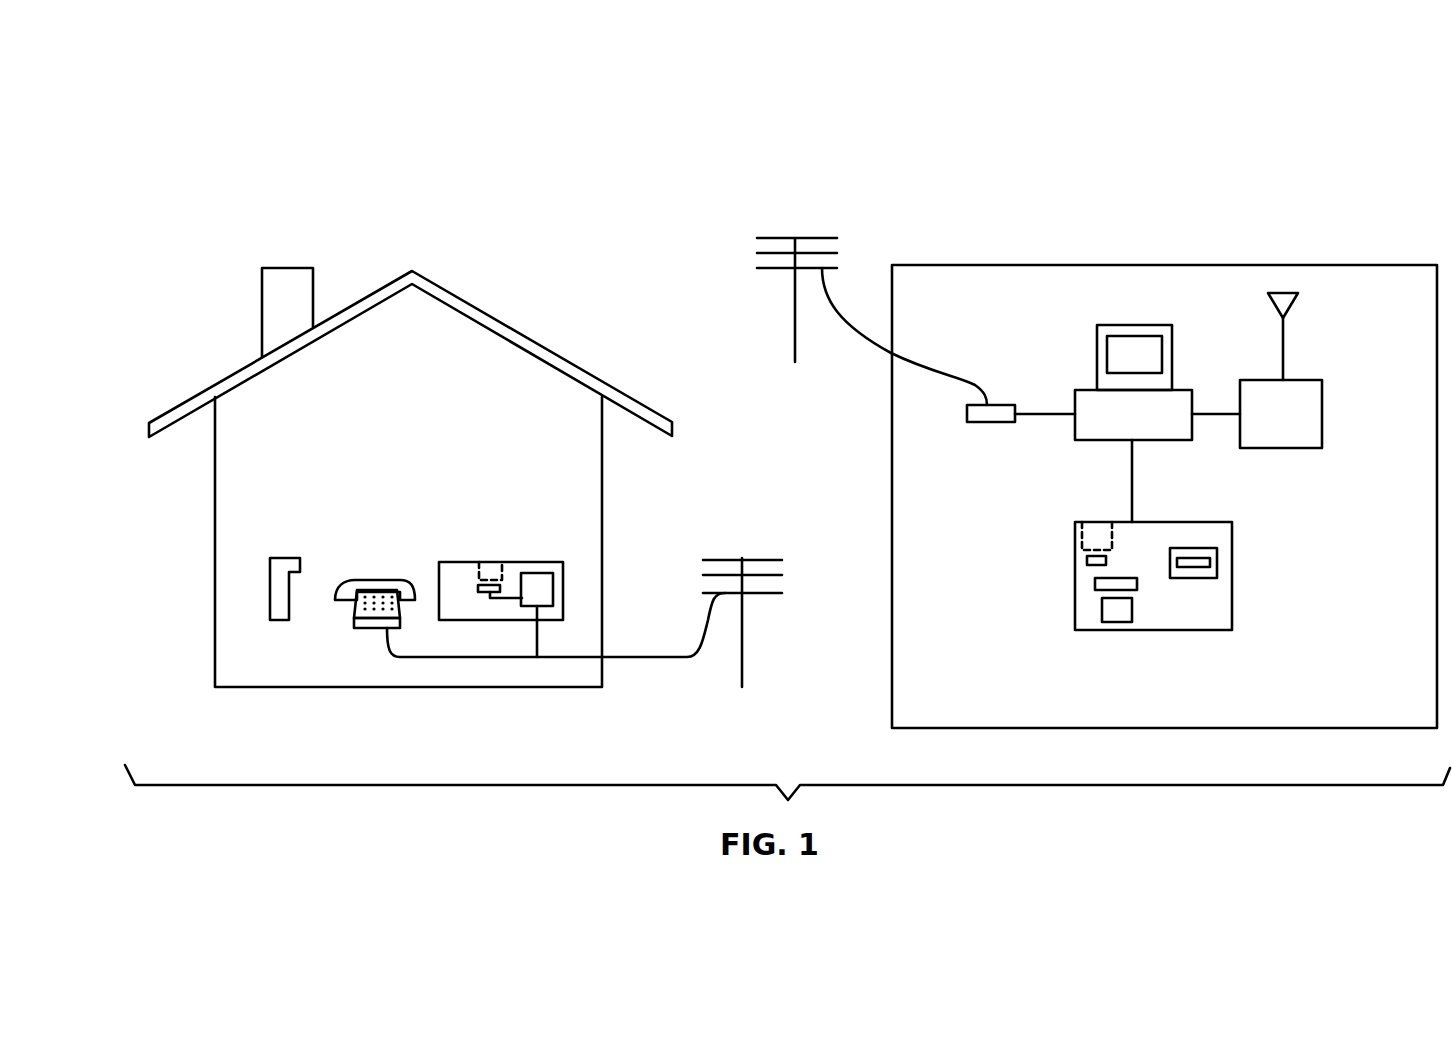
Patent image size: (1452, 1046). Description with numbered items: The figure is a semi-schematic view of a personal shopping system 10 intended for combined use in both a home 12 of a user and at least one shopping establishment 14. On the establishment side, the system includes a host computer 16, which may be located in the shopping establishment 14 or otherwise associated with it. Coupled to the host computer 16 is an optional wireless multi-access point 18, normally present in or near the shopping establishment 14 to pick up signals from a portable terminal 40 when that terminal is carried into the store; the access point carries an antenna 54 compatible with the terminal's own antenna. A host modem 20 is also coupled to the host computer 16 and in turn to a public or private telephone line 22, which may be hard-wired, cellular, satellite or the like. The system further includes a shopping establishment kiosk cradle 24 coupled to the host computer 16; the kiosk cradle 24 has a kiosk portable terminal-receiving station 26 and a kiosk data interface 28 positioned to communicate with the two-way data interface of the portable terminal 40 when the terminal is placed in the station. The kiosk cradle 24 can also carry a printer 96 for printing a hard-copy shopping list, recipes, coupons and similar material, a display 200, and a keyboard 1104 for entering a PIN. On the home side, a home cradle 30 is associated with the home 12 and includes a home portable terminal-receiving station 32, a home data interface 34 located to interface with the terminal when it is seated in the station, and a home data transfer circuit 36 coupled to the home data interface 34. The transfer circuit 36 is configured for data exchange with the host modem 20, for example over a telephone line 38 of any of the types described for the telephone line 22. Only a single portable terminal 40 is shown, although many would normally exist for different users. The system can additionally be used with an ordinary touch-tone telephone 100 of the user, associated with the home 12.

The personal shopping system 10 is at (495, 245).
The home 12 is at (212, 527).
The shopping establishment 14 is at (1332, 265).
The host computer 16 is at (1075, 423).
The wireless multi-access point 18 is at (1322, 412).
The host modem 20 is at (1003, 405).
The telephone line 22 is at (792, 317).
The shopping establishment kiosk cradle 24 is at (1232, 593).
The kiosk portable terminal-receiving station 26 is at (1093, 515).
The kiosk data interface 28 is at (1085, 558).
The home cradle 30 is at (455, 562).
The home portable terminal-receiving station 32 is at (489, 548).
The home data interface 34 is at (485, 593).
The home data transfer circuit 36 is at (540, 573).
The telephone line 38 is at (743, 653).
The portable terminal 40 is at (282, 558).
The antenna 54 is at (1297, 300).
The printer 96 is at (1217, 558).
The telephone 100 is at (353, 620).
The display 200 is at (1117, 622).
The keyboard 1104 is at (1095, 583).